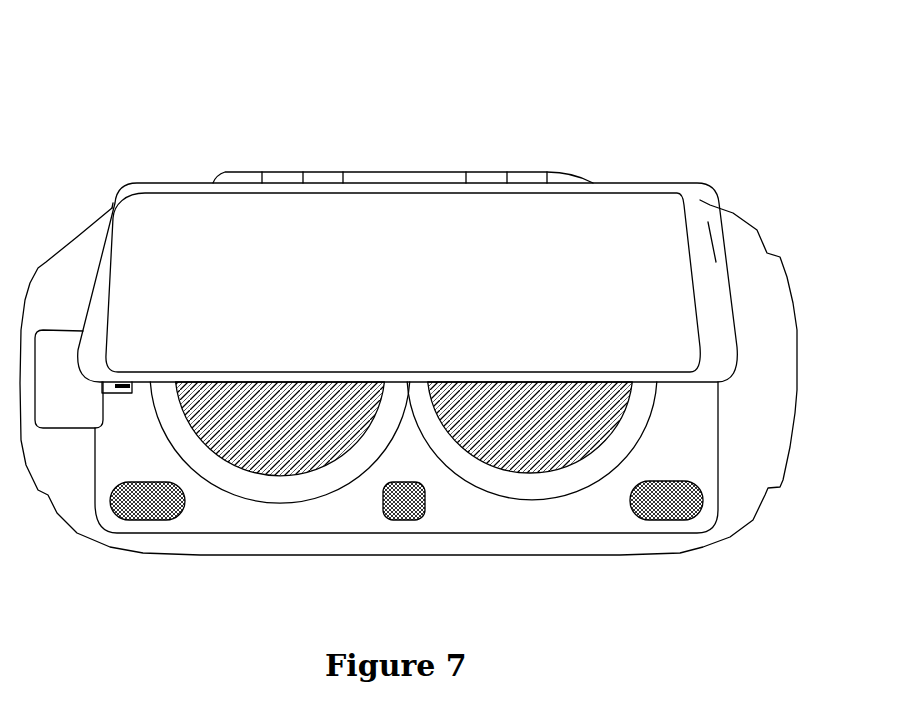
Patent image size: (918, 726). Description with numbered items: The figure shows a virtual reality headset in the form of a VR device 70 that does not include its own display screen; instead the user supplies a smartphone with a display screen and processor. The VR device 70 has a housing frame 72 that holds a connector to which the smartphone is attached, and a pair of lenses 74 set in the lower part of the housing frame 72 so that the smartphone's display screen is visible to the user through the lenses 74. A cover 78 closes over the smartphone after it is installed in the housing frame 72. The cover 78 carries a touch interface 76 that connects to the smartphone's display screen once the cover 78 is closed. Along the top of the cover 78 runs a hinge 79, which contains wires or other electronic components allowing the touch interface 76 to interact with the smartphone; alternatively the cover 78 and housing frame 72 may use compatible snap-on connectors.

The VR device 70 is at (121, 84).
The housing frame 72 is at (752, 222).
The lenses 74 is at (257, 474).
The touch interface 76 is at (649, 193).
The cover 78 is at (113, 201).
The hinge 79 is at (326, 172).